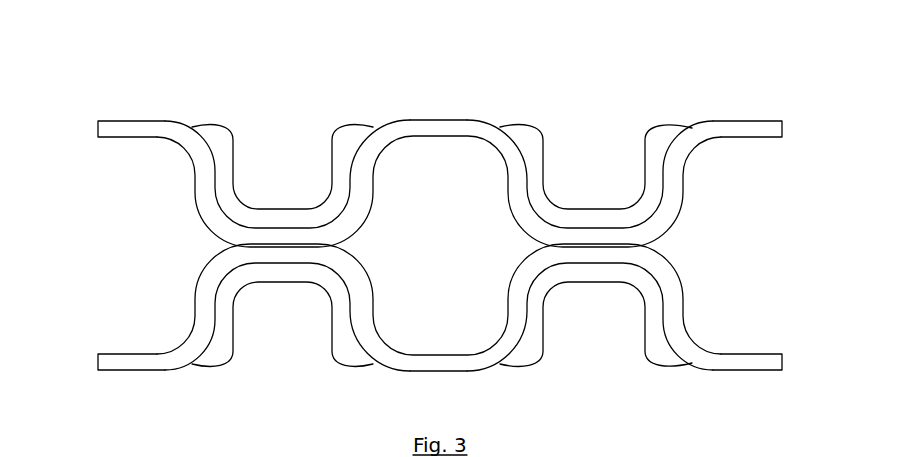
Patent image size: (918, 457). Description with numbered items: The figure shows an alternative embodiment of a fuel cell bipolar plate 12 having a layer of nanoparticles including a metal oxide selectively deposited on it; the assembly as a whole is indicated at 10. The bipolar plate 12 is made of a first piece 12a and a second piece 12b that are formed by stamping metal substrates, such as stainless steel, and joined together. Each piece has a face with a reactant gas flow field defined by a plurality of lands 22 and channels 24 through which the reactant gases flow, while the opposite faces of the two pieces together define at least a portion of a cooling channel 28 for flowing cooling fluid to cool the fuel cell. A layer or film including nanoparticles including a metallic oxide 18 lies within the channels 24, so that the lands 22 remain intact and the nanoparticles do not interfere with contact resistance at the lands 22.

The assembly 10 is at (86, 44).
The fuel cell bipolar plate 12 is at (141, 244).
The first piece 12a is at (118, 128).
The second piece 12b is at (128, 362).
The layer of film including nanoparticles including a metallic oxide 18 is at (218, 137).
The lands 22 is at (128, 121).
The channels 24 is at (285, 177).
The cooling channel 28 is at (437, 315).